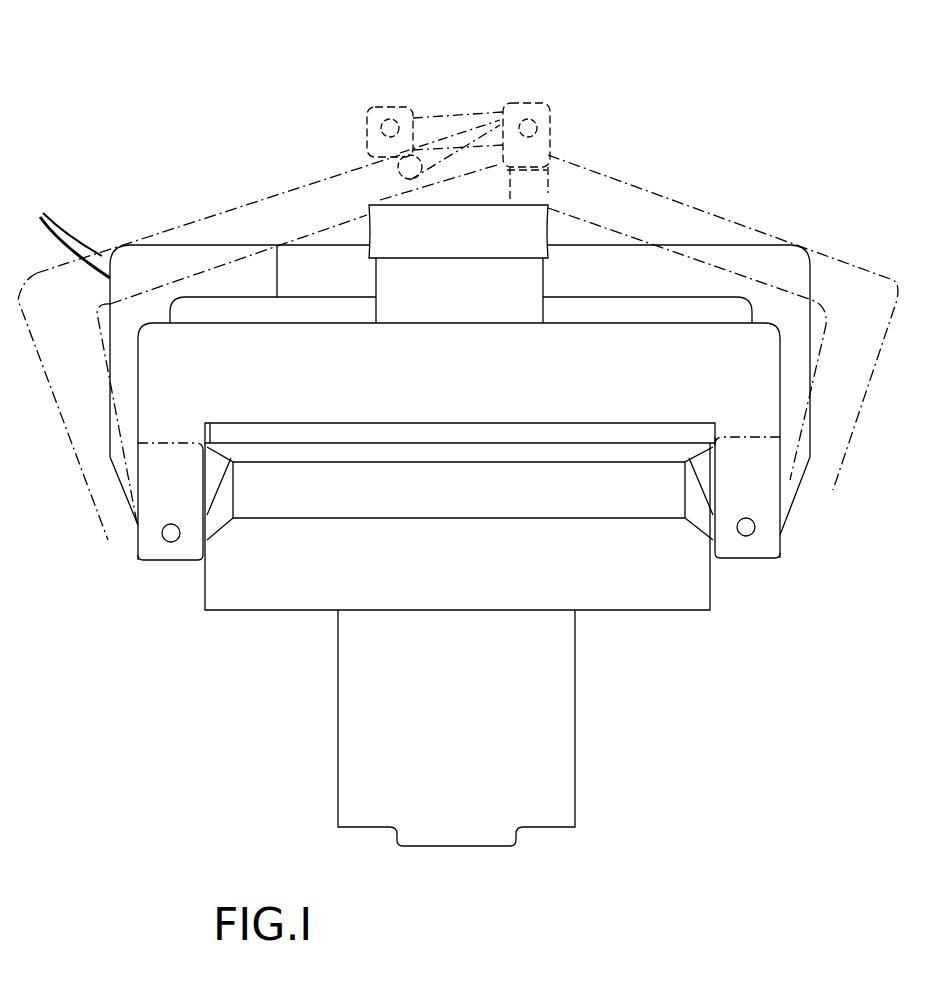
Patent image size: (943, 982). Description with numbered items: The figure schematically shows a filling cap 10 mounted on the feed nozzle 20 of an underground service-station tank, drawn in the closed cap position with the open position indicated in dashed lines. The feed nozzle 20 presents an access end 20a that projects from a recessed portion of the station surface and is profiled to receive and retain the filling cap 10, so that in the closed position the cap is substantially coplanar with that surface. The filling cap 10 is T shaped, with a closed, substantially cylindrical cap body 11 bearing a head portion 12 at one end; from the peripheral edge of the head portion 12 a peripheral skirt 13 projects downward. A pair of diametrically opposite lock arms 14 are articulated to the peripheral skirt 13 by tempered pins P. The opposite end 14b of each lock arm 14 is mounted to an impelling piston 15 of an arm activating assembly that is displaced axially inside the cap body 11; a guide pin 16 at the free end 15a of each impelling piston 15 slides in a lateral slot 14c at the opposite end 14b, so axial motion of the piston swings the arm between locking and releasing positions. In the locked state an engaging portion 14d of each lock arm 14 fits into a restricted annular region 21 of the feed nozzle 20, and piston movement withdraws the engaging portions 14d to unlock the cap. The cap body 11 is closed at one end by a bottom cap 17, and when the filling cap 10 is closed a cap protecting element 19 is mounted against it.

The filling cap 10 is at (722, 206).
The cap body 11 is at (372, 748).
The head portion 12 is at (742, 407).
The peripheral skirt 13 is at (775, 497).
The lock arm 14 is at (422, 347).
The opposite end 14b is at (398, 102).
The lateral slot 14c is at (470, 135).
The engaging portion 14d is at (163, 445).
The impelling piston 15 is at (533, 192).
The free end 15a is at (380, 147).
The guide pin 16 is at (532, 128).
The bottom cap 17 is at (493, 850).
The cap protecting element 19 is at (397, 222).
The feed nozzle 20 is at (612, 620).
The access end 20a is at (305, 420).
The restricted annular region 21 is at (249, 477).
The tempered pins P is at (170, 537).